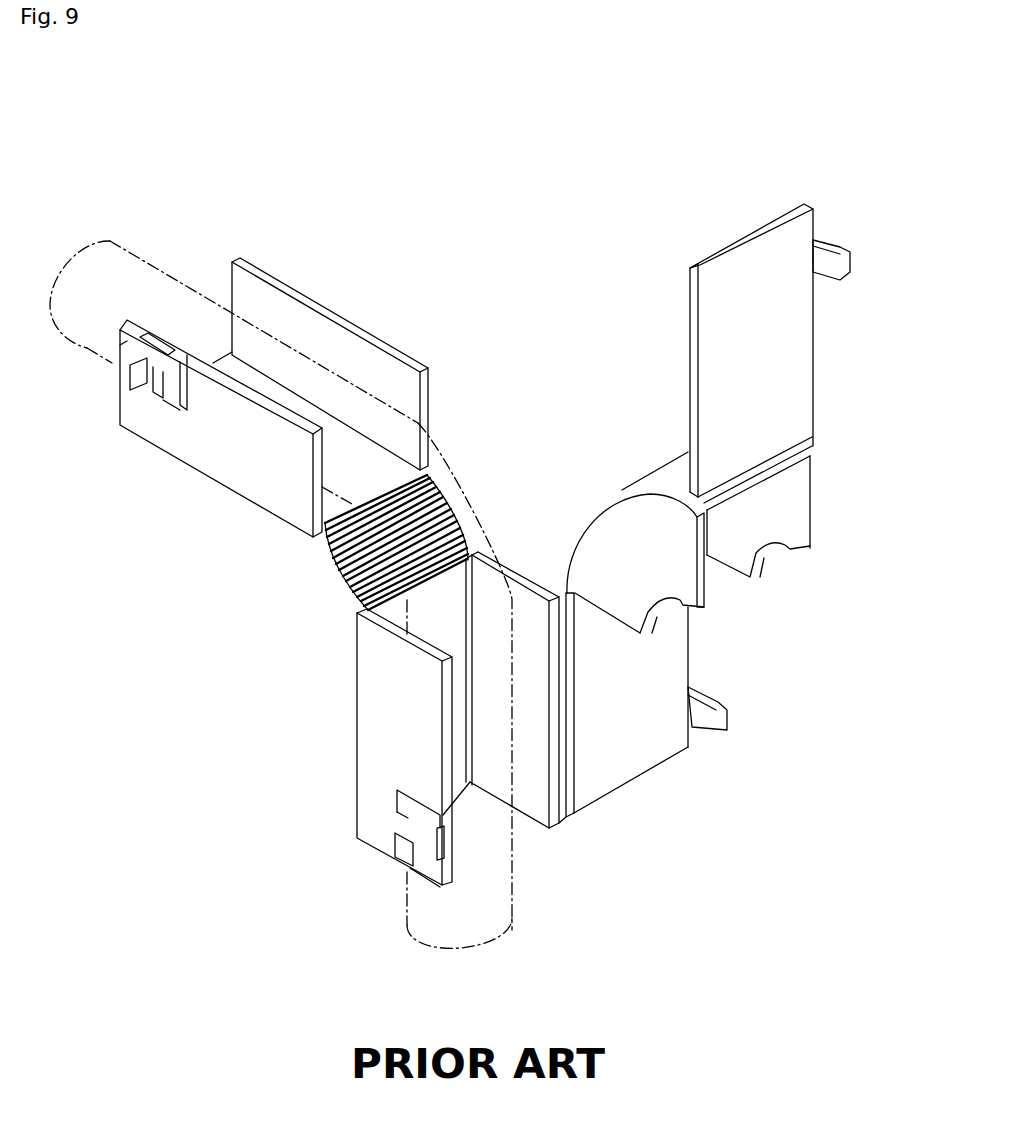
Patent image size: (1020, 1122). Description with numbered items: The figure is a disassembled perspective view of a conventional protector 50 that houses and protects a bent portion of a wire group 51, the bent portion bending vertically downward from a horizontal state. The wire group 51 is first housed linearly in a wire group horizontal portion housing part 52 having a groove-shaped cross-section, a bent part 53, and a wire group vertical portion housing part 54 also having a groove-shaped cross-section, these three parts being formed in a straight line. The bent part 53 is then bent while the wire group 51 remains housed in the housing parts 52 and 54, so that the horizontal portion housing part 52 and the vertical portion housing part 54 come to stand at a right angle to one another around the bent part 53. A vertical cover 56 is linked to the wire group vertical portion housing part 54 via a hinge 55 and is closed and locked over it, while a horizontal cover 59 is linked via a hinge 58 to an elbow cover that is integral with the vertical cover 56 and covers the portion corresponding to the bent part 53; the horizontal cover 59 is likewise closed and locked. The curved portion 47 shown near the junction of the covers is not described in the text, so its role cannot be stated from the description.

The curved cover portion 47 is at (593, 527).
The protector 50 is at (586, 194).
The wire group 51 is at (73, 276).
The wire group horizontal portion housing part 52 is at (390, 345).
The bent part 53 is at (360, 575).
The wire group vertical portion housing part 54 is at (378, 768).
The hinge 55 is at (562, 690).
The vertical cover 56 is at (670, 650).
The hinge 58 is at (760, 463).
The horizontal cover 59 is at (718, 323).